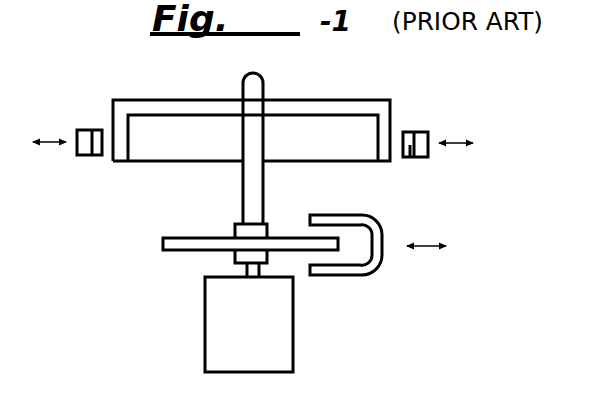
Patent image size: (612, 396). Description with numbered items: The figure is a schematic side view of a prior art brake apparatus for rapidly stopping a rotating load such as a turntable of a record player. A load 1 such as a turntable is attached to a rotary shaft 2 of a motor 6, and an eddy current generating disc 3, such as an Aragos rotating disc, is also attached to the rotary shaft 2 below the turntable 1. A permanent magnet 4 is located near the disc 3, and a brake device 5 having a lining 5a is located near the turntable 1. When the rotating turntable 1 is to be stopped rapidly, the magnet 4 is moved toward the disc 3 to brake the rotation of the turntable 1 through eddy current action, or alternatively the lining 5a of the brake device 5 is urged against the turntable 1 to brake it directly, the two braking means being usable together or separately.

The load 1 is at (354, 100).
The rotary shaft 2 is at (241, 197).
The eddy current generating disc 3 is at (178, 252).
The permanent magnet 4 is at (372, 276).
The brake device 5 is at (420, 131).
The lining 5a is at (410, 158).
The motor 6 is at (294, 338).